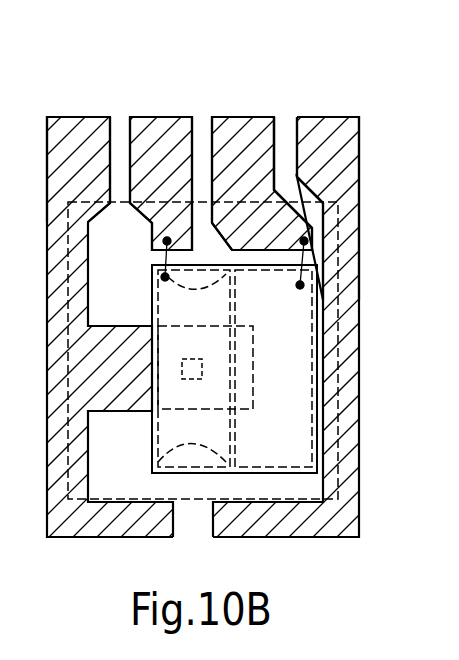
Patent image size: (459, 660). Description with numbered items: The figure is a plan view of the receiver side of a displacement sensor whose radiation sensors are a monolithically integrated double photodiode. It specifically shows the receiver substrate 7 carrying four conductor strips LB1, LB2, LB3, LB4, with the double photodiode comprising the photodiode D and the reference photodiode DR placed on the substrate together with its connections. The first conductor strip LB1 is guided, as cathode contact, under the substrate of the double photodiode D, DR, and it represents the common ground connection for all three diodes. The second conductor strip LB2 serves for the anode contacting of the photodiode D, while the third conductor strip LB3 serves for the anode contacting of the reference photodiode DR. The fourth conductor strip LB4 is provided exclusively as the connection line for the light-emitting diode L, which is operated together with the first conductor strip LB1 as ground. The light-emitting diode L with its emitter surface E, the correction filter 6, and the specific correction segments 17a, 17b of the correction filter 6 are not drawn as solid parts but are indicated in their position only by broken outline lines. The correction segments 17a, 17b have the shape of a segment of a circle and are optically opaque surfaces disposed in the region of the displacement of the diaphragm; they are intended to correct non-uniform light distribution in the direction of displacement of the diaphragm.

The first conductor strip LB1 is at (69, 130).
The second conductor strip LB2 is at (155, 130).
The third conductor strip LB3 is at (240, 130).
The fourth conductor strip LB4 is at (338, 145).
The receiver substrate 7 is at (283, 130).
The correction filter 6 is at (338, 447).
The photodiode D is at (165, 277).
The reference photodiode DR is at (313, 283).
The light-emitting diode L is at (253, 361).
The emitter surface E is at (202, 368).
The correction segment 17a is at (180, 288).
The correction segment 17b is at (165, 450).